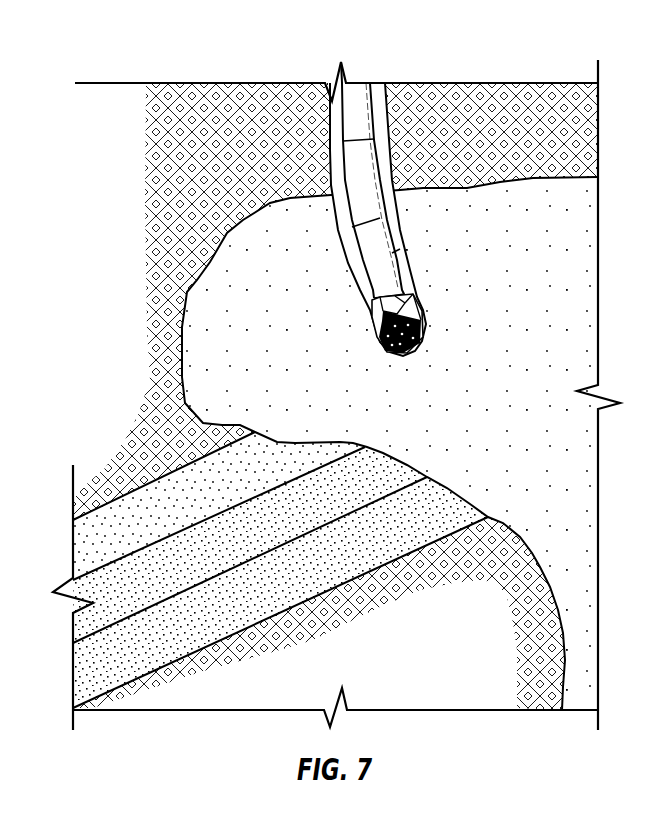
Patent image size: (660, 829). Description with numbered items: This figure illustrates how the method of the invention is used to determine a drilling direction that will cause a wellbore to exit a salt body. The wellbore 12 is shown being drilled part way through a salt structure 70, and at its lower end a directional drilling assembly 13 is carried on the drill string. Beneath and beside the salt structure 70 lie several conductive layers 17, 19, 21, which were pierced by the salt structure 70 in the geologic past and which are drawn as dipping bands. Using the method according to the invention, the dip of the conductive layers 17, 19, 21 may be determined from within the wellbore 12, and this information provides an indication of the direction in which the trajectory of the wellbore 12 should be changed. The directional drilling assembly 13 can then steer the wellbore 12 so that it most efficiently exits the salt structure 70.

The wellbore 12 is at (347, 242).
The directional drilling assembly 13 is at (400, 249).
The conductive layer 17 is at (223, 501).
The conductive layer 19 is at (223, 565).
The conductive layer 21 is at (223, 626).
The salt structure 70 is at (290, 373).